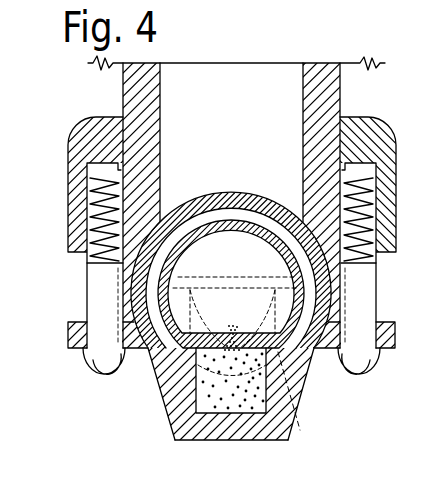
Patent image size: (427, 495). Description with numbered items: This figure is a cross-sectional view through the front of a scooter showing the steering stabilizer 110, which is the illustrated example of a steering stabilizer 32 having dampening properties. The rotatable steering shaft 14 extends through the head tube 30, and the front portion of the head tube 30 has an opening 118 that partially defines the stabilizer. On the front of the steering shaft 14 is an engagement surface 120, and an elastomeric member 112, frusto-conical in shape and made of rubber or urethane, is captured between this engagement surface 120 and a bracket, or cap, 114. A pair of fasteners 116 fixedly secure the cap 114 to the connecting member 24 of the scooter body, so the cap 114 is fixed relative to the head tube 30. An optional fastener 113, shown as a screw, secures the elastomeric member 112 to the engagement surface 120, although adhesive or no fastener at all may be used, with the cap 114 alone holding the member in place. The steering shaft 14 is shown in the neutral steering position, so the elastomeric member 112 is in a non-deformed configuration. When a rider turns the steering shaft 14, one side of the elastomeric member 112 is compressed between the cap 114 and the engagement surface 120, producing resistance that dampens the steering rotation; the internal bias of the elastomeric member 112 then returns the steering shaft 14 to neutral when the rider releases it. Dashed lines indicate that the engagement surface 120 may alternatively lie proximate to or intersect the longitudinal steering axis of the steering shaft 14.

The connecting member 24 is at (338, 111).
The head tube 30 is at (235, 192).
The steering shaft 14 is at (263, 217).
The engagement surface 120 is at (238, 305).
The fastener 113 is at (248, 314).
The opening 118 is at (304, 340).
The fasteners 116 is at (103, 373).
The steering stabilizer 110 is at (119, 381).
The steering stabilizer 32 is at (121, 405).
The elastomeric member 112 is at (220, 400).
The cap 114 is at (268, 441).